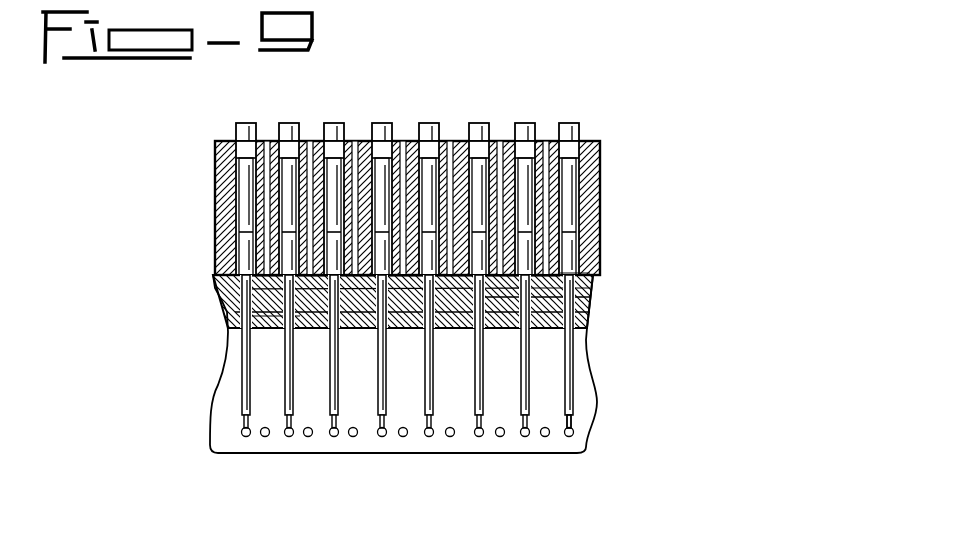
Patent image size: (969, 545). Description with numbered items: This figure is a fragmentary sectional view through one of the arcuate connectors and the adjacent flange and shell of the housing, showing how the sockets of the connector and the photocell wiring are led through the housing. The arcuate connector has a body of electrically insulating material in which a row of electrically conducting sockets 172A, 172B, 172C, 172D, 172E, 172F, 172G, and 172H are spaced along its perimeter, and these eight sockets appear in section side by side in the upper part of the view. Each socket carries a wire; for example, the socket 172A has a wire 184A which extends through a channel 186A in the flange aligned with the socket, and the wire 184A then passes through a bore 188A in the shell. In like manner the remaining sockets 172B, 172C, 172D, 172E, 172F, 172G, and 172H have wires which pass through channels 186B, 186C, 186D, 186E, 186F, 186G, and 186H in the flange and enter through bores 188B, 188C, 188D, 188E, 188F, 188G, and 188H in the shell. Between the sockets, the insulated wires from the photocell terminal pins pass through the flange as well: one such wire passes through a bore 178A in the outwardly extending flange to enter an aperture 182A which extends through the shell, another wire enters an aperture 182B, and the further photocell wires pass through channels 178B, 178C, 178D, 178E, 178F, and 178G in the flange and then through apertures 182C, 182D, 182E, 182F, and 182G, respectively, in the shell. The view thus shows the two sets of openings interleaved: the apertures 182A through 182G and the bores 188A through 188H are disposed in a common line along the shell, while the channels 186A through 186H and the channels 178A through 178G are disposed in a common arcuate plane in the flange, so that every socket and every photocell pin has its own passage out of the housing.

The socket 172A is at (598, 95).
The socket 172B is at (545, 108).
The socket 172C is at (479, 122).
The socket 172D is at (442, 108).
The socket 172E is at (382, 122).
The socket 172F is at (345, 108).
The socket 172G is at (302, 96).
The socket 172H is at (250, 103).
The bore 178A is at (547, 336).
The channel 178B is at (497, 332).
The channel 178C is at (450, 332).
The channel 178D is at (405, 332).
The channel 178E is at (357, 332).
The channel 178F is at (312, 332).
The channel 178G is at (272, 330).
The channel 186A is at (590, 273).
The channel 186B is at (590, 288).
The channel 186C is at (590, 297).
The channel 186D is at (590, 312).
The channel 186E is at (250, 276).
The channel 186F is at (240, 289).
The channel 186G is at (235, 312).
The channel 186H is at (246, 316).
The aperture 182A is at (547, 428).
The aperture 182B is at (502, 436).
The aperture 182C is at (450, 436).
The aperture 182D is at (402, 436).
The aperture 182E is at (351, 436).
The aperture 182F is at (306, 436).
The aperture 182G is at (262, 428).
The bore 188A is at (573, 434).
The bore 188B is at (526, 436).
The bore 188C is at (478, 436).
The bore 188D is at (428, 436).
The bore 188E is at (381, 436).
The bore 188F is at (331, 436).
The bore 188G is at (285, 434).
The bore 188H is at (242, 431).
The wire 184A is at (571, 418).